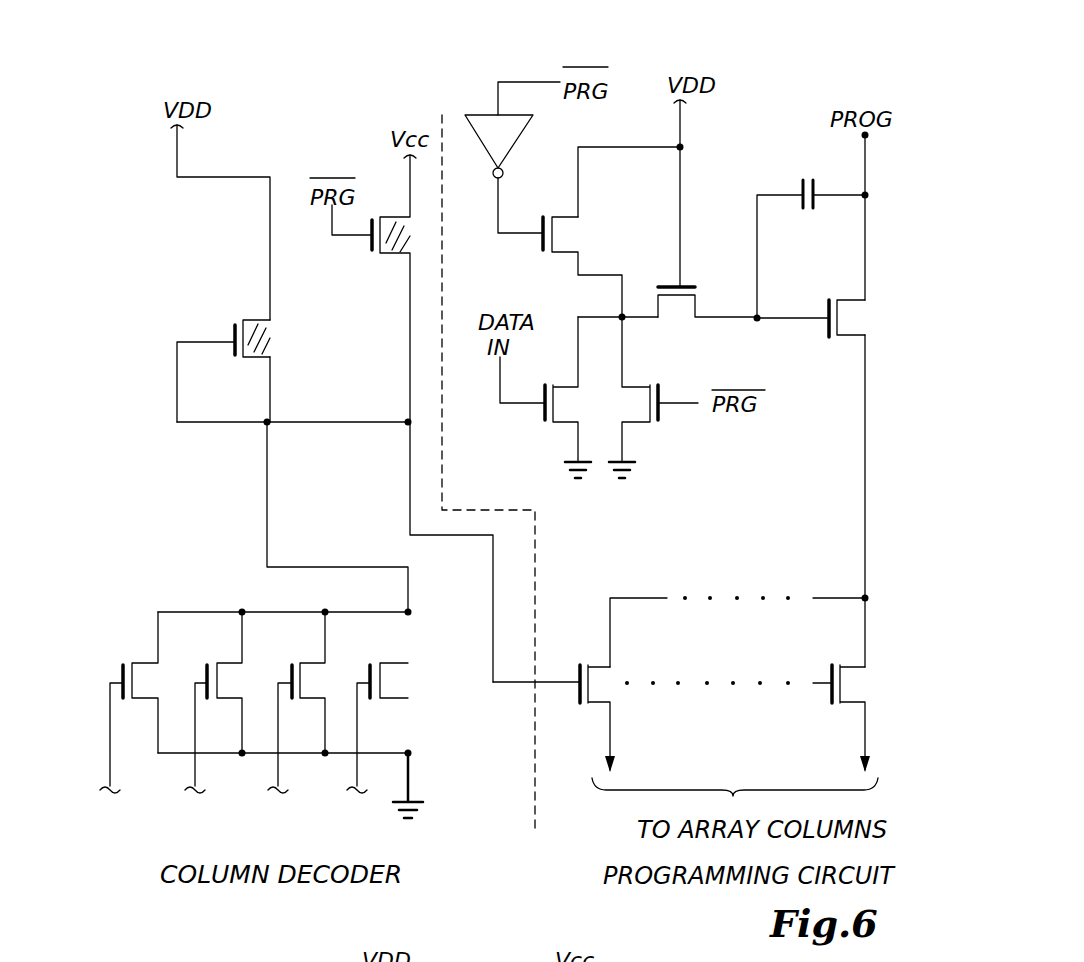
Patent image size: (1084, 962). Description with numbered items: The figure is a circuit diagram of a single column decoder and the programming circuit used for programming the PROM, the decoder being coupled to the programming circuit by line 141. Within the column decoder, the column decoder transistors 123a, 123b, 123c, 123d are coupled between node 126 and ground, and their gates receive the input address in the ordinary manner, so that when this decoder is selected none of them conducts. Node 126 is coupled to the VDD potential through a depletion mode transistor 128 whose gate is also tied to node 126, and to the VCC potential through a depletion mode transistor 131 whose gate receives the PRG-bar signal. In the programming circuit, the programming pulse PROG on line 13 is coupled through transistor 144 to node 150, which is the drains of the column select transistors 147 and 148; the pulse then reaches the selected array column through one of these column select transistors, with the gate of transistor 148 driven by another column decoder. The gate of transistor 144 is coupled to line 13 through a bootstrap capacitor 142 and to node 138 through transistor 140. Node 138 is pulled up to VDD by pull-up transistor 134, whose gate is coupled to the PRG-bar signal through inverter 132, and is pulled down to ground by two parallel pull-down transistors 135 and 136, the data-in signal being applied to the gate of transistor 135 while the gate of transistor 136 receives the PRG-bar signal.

The line 13 is at (865, 162).
The column decoder transistor 123a is at (143, 663).
The column decoder transistor 123b is at (225, 670).
The column decoder transistor 123c is at (312, 670).
The column decoder transistor 123d is at (387, 670).
The node 126 is at (338, 422).
The depletion mode transistor 128 is at (265, 347).
The depletion mode transistor 131 is at (403, 238).
The inverter 132 is at (478, 112).
The pull-up transistor 134 is at (553, 230).
The pull-down transistor 135 is at (553, 408).
The pull-down transistor 136 is at (645, 412).
The node 138 is at (598, 317).
The transistor 140 is at (685, 297).
The line 141 is at (510, 682).
The bootstrap capacitor 142 is at (803, 188).
The transistor 144 is at (840, 313).
The column select transistor 147 is at (590, 688).
The column select transistor 148 is at (843, 675).
The node 150 is at (865, 438).